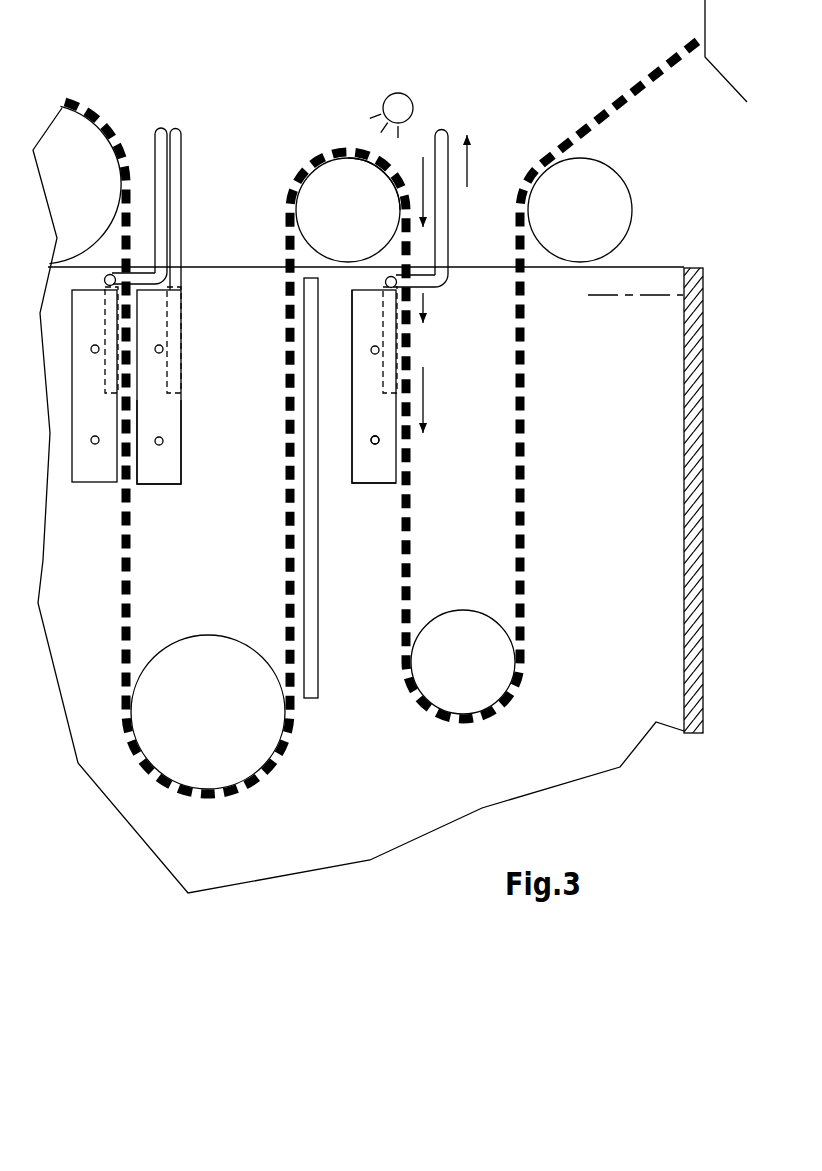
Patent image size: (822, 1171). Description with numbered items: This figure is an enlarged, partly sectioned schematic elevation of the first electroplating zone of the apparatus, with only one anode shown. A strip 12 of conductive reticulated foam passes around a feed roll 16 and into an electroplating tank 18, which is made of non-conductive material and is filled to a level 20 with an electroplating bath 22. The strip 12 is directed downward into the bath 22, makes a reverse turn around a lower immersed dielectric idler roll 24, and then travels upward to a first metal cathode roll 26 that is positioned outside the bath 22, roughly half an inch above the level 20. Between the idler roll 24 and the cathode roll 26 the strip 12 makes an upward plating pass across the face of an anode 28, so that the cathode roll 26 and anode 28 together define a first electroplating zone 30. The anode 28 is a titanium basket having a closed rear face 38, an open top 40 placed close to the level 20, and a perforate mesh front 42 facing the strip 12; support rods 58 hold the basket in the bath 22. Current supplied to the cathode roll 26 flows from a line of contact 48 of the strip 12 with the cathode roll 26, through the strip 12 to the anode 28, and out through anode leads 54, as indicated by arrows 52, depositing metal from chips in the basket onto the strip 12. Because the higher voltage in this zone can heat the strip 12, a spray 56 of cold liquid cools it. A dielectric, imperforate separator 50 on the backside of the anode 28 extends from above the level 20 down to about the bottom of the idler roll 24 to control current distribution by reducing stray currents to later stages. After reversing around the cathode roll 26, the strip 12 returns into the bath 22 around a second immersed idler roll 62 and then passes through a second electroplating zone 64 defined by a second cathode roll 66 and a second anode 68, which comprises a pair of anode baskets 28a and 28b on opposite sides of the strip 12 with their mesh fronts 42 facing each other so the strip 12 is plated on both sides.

The strip of conductive reticulated foam 12 is at (623, 92).
The feed roll 16 is at (600, 200).
The electroplating tank 18 is at (690, 651).
The level 20 is at (662, 295).
The electroplating bath 22 is at (626, 478).
The idler roll 24 is at (487, 665).
The cathode roll 26 is at (342, 182).
The anode 28 is at (370, 392).
The anode basket 28a is at (103, 467).
The anode basket 28b is at (160, 472).
The first electroplating zone 30 is at (442, 332).
The rear face 38 is at (352, 458).
The open top 40 is at (378, 292).
The perforate front 42 is at (126, 408).
The line of contact 48 is at (402, 208).
The separator 50 is at (318, 565).
The arrows 52 is at (443, 165).
The anode leads 54 is at (443, 220).
The spray 56 is at (399, 106).
The support rods 58 is at (382, 442).
The idler roll 62 is at (225, 727).
The second electroplating zone 64 is at (193, 342).
The second cathode roll 66 is at (73, 162).
The second anode 68 is at (153, 413).